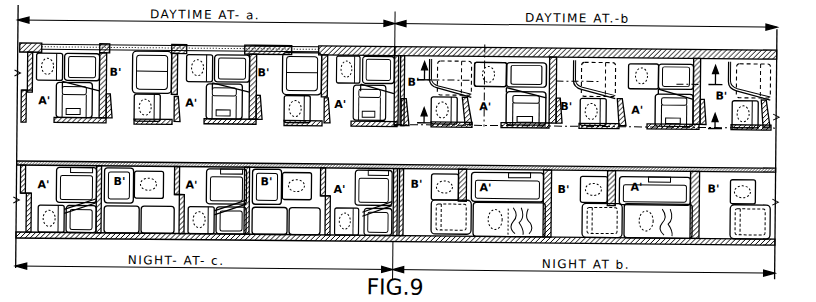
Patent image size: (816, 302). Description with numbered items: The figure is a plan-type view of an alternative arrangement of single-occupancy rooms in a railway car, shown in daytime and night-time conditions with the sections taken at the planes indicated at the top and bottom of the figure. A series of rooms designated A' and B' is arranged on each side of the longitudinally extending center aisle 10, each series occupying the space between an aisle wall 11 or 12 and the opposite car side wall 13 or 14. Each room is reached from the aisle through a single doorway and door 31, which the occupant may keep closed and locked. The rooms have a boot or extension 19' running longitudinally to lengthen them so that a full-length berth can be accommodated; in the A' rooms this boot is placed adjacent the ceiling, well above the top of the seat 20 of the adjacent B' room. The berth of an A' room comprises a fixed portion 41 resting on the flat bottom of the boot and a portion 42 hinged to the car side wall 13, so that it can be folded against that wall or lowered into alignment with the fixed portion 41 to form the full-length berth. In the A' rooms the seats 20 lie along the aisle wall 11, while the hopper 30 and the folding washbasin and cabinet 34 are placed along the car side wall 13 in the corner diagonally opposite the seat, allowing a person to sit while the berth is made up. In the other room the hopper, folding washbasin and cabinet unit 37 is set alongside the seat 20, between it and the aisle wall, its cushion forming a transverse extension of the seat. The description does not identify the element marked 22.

The center aisle 10 is at (543, 105).
The aisle wall 11 is at (568, 129).
The aisle wall 12 is at (533, 168).
The car side wall 13 is at (453, 52).
The car side wall 14 is at (516, 235).
The boot or extension 19' is at (475, 144).
The seat 20 is at (139, 58).
The sliding panel 22 is at (343, 52).
The hopper 30 is at (200, 79).
The door 31 is at (328, 124).
The folding washbasin and cabinet 34 is at (486, 49).
The hopper, folding washbasin and cabinet unit 37 is at (450, 170).
The fixed portion of berth 41 is at (456, 64).
The hinged portion of berth 42 is at (537, 52).